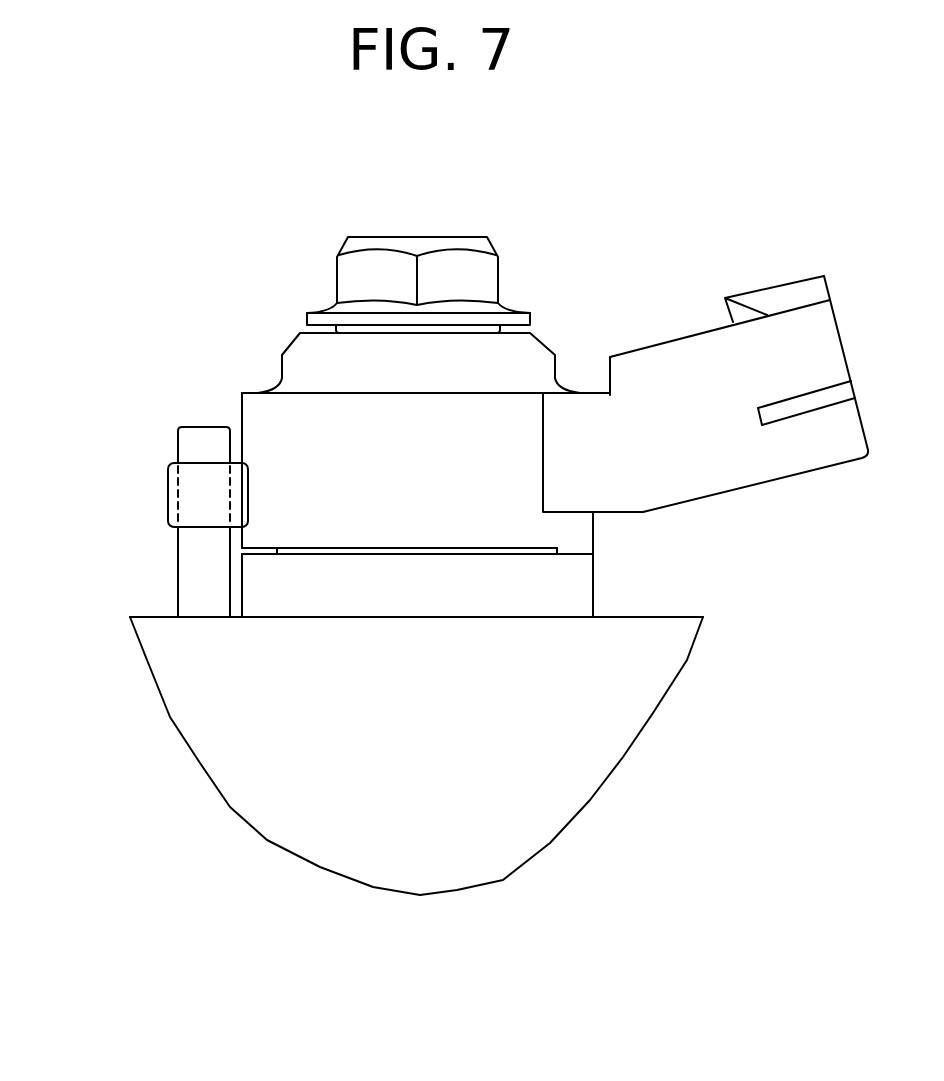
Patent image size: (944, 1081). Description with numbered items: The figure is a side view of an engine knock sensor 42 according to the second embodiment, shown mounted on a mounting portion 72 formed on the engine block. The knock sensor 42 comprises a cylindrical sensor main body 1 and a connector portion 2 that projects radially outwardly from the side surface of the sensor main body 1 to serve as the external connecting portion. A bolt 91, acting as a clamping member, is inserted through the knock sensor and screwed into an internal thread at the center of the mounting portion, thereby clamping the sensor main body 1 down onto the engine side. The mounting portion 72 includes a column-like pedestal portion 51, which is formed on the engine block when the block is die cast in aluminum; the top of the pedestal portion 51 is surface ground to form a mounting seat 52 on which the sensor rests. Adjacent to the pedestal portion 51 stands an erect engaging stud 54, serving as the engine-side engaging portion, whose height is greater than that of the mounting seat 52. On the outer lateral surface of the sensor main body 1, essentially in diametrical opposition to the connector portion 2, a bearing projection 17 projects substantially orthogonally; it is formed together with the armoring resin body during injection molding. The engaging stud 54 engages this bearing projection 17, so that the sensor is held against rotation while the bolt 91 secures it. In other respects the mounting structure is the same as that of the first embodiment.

The engine knock sensor 42 is at (612, 208).
The bolt 91 is at (425, 233).
The sensor main body 1 is at (552, 348).
The connector portion 2 is at (657, 340).
The engaging stud 54 is at (213, 427).
The bearing projection 17 is at (168, 503).
The mounting seat 52 is at (565, 550).
The column-like pedestal portion 51 is at (593, 583).
The mounting portion 72 is at (157, 617).